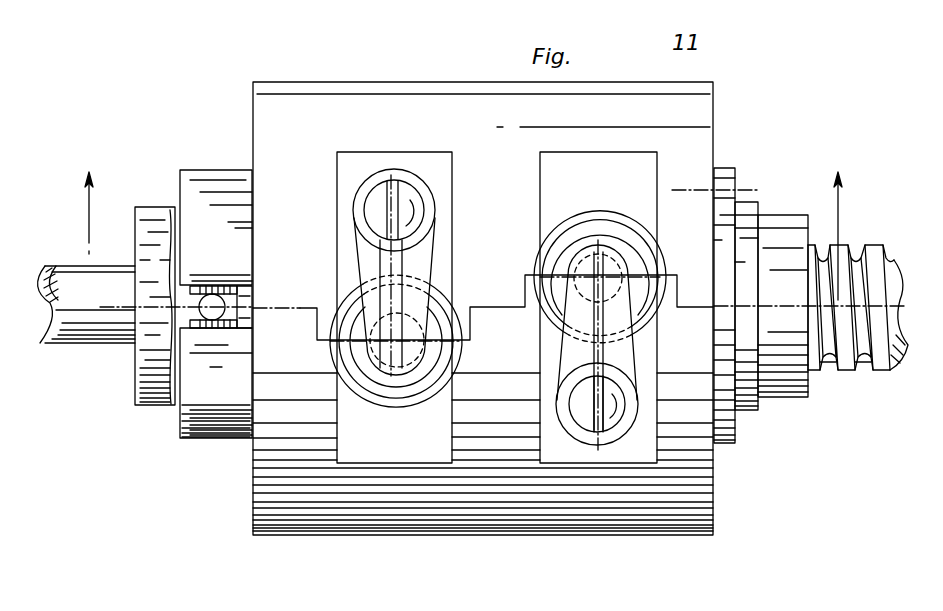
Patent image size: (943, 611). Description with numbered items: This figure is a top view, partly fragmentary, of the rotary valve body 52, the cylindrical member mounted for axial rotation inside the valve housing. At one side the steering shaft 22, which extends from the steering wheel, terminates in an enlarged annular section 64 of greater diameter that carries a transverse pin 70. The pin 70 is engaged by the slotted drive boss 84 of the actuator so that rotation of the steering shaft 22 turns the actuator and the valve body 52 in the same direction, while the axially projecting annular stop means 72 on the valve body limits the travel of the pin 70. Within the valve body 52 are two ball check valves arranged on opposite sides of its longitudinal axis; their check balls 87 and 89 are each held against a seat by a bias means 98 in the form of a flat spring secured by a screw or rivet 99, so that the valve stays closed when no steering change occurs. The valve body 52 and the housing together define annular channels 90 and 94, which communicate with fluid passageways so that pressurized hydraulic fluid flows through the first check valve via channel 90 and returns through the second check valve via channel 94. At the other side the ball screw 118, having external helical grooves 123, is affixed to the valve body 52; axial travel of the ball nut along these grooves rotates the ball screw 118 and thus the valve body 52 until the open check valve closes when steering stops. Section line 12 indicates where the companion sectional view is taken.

The section line 12 is at (462, 220).
The steering shaft 22 is at (72, 346).
The rotary valve body 52 is at (338, 537).
The enlarged annular section 64 is at (145, 408).
The pin 70 is at (200, 305).
The annular stop means 72 is at (197, 442).
The drive boss 84 is at (208, 297).
The check ball 87 is at (433, 267).
The check ball 89 is at (605, 248).
The annular channel 90 is at (376, 385).
The annular channel 94 is at (568, 243).
The bias means 98 is at (346, 225).
The screw or rivet 99 is at (408, 197).
The ball screw 118 is at (873, 244).
The external helical grooves 123 is at (867, 368).